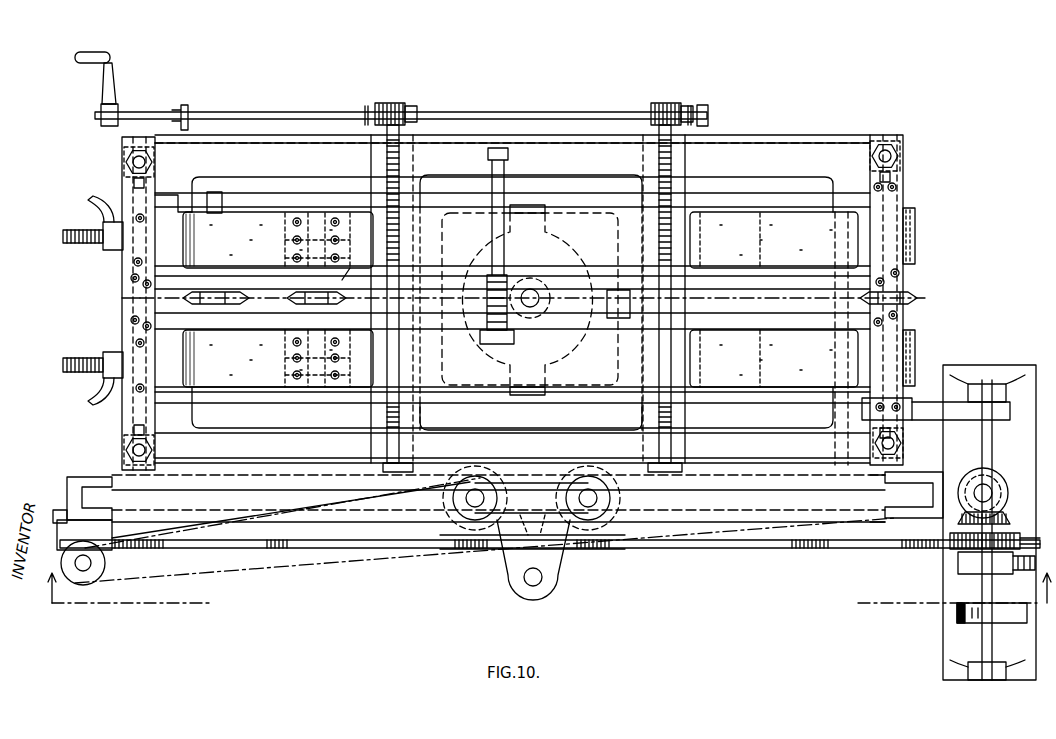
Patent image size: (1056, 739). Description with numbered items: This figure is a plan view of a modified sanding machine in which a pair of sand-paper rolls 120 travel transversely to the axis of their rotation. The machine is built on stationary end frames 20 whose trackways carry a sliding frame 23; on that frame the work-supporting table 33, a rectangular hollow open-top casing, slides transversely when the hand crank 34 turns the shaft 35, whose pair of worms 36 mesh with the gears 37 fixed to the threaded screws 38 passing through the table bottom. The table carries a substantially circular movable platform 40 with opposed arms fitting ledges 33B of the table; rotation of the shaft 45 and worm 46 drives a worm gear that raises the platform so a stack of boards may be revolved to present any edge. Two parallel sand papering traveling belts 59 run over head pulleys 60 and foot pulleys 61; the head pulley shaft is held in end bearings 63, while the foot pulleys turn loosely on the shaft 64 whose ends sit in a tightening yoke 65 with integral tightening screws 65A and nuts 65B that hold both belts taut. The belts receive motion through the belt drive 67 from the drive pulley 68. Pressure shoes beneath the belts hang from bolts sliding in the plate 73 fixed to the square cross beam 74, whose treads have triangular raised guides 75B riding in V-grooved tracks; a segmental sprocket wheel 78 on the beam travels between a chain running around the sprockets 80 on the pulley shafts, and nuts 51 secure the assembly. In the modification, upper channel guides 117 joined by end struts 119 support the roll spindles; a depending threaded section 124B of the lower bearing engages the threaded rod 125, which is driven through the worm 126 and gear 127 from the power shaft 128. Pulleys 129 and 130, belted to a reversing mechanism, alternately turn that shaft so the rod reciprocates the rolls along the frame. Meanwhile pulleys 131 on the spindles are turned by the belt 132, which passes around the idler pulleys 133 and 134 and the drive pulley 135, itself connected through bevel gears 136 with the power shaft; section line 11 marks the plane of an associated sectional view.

The section line 11- 11 is at (550, 598).
The stationary end frame 20 is at (122, 299).
The frame 23 is at (760, 138).
The work-supporting table 33 is at (380, 170).
The threaded adjusting column 33B is at (698, 416).
The hand crank 34 is at (115, 84).
The shaft 35 is at (225, 112).
The worm 36 is at (380, 104).
The gear 37 is at (414, 106).
The threaded screw 38 is at (405, 140).
The movable platform 40 is at (552, 205).
The shaft 45 is at (505, 166).
The worm 46 is at (510, 262).
The clamping nut 51 is at (125, 163).
The sand papering traveling belt 59 is at (352, 212).
The head pulley 60 is at (840, 218).
The foot pulley 61 is at (268, 212).
The end bearing 63 is at (898, 194).
The shaft 64 is at (218, 193).
The tightening yoke 65 is at (176, 197).
The tightening screw 65A is at (64, 242).
The nut 65B is at (113, 251).
The belt drive 67 is at (910, 404).
The drive pulley 68 is at (966, 398).
The plate 73 is at (338, 372).
The cross beam 74 is at (312, 214).
The triangular raised guide 75B is at (344, 272).
The sprocket wheel 78 is at (336, 297).
The sprocket 80 is at (226, 297).
The upper channel guide 117 is at (90, 476).
The end strut 119 is at (72, 505).
The roll 120 is at (478, 467).
The depending integral section 124B is at (493, 548).
The threaded rod 125 is at (762, 548).
The worm 126 is at (948, 541).
The gear 127 is at (958, 556).
The power shaft 128 is at (983, 438).
The pulley 129 is at (958, 568).
The pulley 130 is at (955, 615).
The pulley 131 is at (611, 498).
The belt 132 is at (290, 504).
The idler pulley 133 is at (552, 592).
The idler pulley 134 is at (568, 550).
The drive pulley 135 is at (932, 494).
The bevel gear 136 is at (1008, 520).